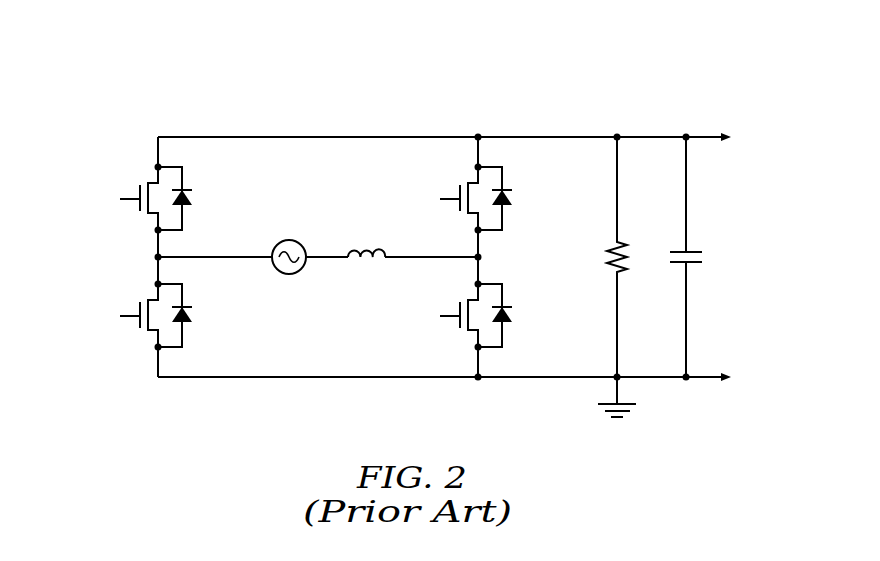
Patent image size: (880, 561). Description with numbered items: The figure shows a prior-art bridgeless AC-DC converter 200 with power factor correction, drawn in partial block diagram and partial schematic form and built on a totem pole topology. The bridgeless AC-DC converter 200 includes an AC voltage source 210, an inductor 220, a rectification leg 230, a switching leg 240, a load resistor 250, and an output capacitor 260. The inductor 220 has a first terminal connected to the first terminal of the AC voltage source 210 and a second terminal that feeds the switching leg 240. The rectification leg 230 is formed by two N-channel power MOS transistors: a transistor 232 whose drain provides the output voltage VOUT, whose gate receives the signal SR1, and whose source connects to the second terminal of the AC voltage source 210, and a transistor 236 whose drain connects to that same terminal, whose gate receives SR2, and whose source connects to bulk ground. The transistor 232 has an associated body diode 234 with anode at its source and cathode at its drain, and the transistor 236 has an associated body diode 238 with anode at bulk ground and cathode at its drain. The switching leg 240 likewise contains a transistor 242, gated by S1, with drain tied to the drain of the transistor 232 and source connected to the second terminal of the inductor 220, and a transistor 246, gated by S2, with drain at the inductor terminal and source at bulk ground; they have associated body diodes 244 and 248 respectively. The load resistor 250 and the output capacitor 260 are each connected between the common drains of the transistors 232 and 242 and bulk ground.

The bridgeless AC-DC converter 200 is at (126, 420).
The AC voltage source 210 is at (291, 240).
The inductor 220 is at (386, 250).
The rectification leg 230 is at (176, 110).
The transistor 232 is at (150, 183).
The body diode 234 is at (193, 200).
The transistor 236 is at (150, 300).
The body diode 238 is at (193, 317).
The switching leg 240 is at (493, 110).
The transistor 242 is at (470, 183).
The body diode 244 is at (513, 200).
The transistor 246 is at (470, 300).
The body diode 248 is at (513, 317).
The load resistor 250 is at (606, 255).
The output capacitor 260 is at (701, 256).